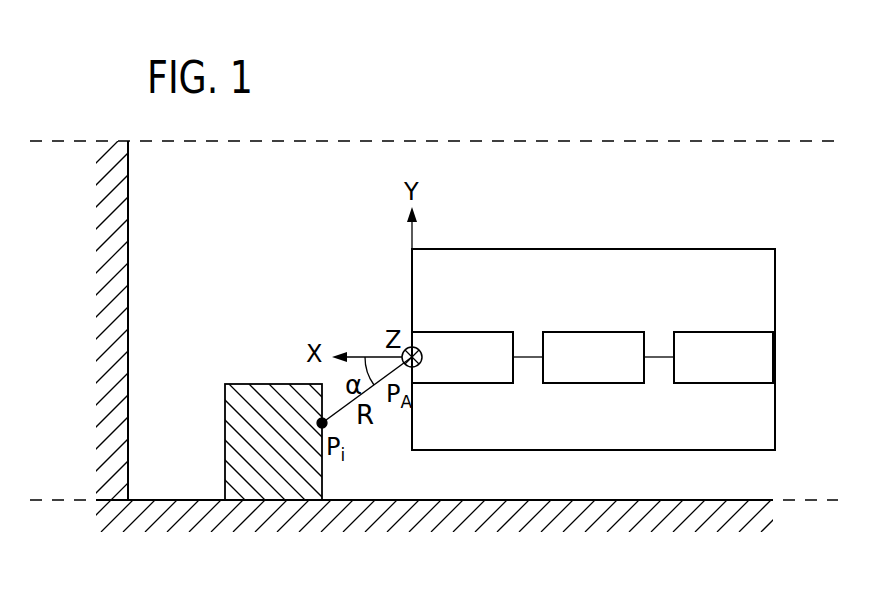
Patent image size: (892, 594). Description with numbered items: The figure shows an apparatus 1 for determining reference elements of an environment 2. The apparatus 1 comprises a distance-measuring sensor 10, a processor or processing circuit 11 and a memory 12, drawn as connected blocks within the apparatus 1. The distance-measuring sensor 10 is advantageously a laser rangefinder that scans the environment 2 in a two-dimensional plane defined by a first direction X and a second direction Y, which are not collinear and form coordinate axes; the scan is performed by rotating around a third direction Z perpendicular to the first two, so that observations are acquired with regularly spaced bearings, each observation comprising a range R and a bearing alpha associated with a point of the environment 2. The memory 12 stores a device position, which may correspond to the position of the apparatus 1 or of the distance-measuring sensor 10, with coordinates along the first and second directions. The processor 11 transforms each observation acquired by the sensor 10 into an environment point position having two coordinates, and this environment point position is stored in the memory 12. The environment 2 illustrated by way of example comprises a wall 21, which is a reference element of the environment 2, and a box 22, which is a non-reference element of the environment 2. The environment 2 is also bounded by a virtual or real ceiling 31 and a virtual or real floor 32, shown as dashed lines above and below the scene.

The apparatus 1 is at (593, 323).
The environment 2 is at (266, 186).
The distance-measuring sensor 10 is at (452, 330).
The processor 11 is at (580, 330).
The memory 12 is at (718, 330).
The wall 21 is at (130, 250).
The box 22 is at (250, 383).
The ceiling 31 is at (75, 140).
The floor 32 is at (75, 499).